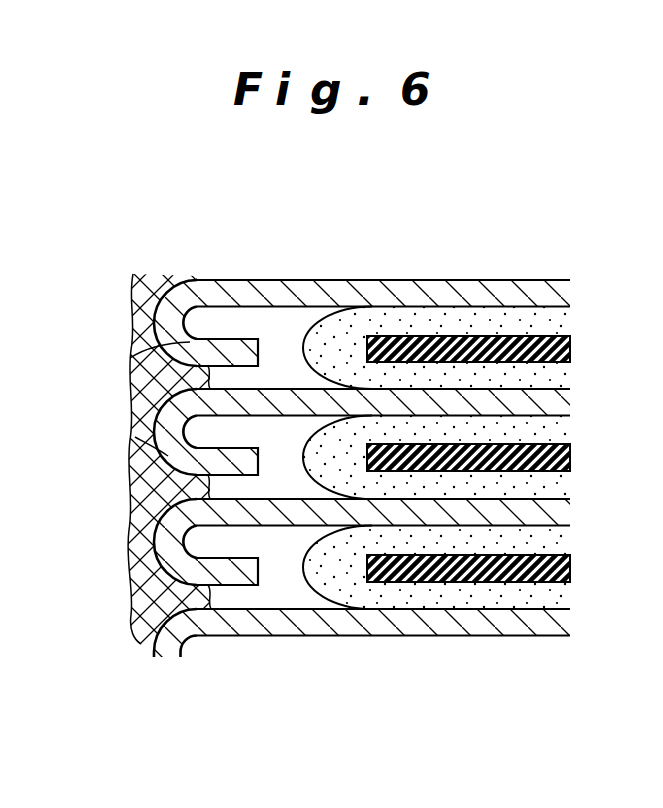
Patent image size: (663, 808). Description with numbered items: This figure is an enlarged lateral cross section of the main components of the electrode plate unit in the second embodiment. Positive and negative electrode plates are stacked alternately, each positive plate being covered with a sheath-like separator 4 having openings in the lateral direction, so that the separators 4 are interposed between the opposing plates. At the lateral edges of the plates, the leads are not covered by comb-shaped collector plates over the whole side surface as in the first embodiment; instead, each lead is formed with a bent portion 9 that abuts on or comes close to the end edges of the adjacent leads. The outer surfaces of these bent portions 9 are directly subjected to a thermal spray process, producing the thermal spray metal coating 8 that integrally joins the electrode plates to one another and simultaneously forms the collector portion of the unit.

The separator 4 is at (427, 487).
The thermal spray metal coating 8 is at (160, 582).
The bent portion 9 is at (135, 437).